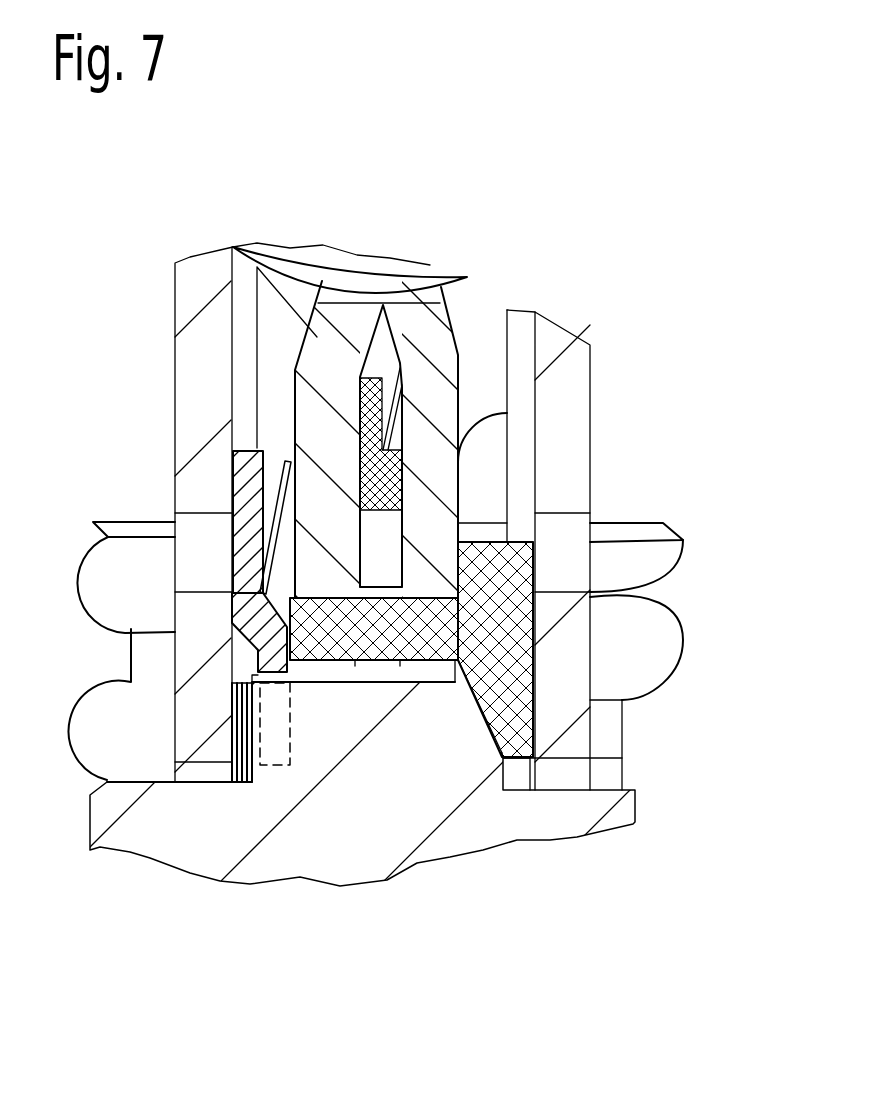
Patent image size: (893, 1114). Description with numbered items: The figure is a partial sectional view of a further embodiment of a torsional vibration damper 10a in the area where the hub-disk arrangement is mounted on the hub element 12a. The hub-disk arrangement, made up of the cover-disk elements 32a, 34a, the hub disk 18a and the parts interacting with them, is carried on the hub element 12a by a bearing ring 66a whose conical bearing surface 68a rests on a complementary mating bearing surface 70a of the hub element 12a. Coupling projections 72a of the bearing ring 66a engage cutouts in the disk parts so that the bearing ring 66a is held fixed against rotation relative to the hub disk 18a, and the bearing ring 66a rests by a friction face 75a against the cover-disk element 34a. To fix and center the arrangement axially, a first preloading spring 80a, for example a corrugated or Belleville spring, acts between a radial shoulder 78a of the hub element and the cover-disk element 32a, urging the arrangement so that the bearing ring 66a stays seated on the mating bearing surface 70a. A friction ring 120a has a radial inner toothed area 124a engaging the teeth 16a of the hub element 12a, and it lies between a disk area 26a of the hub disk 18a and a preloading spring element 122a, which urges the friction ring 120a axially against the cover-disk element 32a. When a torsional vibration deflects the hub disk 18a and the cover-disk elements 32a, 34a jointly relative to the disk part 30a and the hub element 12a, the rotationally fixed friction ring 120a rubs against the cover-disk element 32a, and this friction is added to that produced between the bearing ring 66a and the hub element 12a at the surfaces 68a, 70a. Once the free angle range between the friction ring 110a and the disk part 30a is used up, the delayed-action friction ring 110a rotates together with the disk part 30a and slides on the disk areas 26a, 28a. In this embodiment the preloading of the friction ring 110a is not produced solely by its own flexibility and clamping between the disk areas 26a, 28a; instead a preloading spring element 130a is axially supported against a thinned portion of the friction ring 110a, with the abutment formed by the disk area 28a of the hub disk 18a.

The torsional vibration damper 10a is at (624, 279).
The hub element 12a is at (583, 840).
The teeth 16a is at (500, 745).
The hub disk 18a is at (434, 258).
The disk area 26a is at (237, 247).
The disk area 28a is at (458, 355).
The disk part 30a is at (378, 570).
The cover-disk element 32a is at (177, 357).
The cover-disk element 34a is at (593, 383).
The bearing ring 66a is at (513, 627).
The bearing surface 68a is at (452, 735).
The mating bearing surface 70a is at (502, 757).
The coupling projections 72a is at (262, 630).
The friction face 75a is at (533, 682).
The radial shoulder 78a is at (258, 782).
The first preloading spring 80a is at (240, 730).
The friction ring 110a is at (405, 481).
The friction ring 120a is at (250, 472).
The preloading spring element 122a is at (272, 549).
The radial inner toothed area 124a is at (290, 768).
The preloading spring element 130a is at (371, 300).